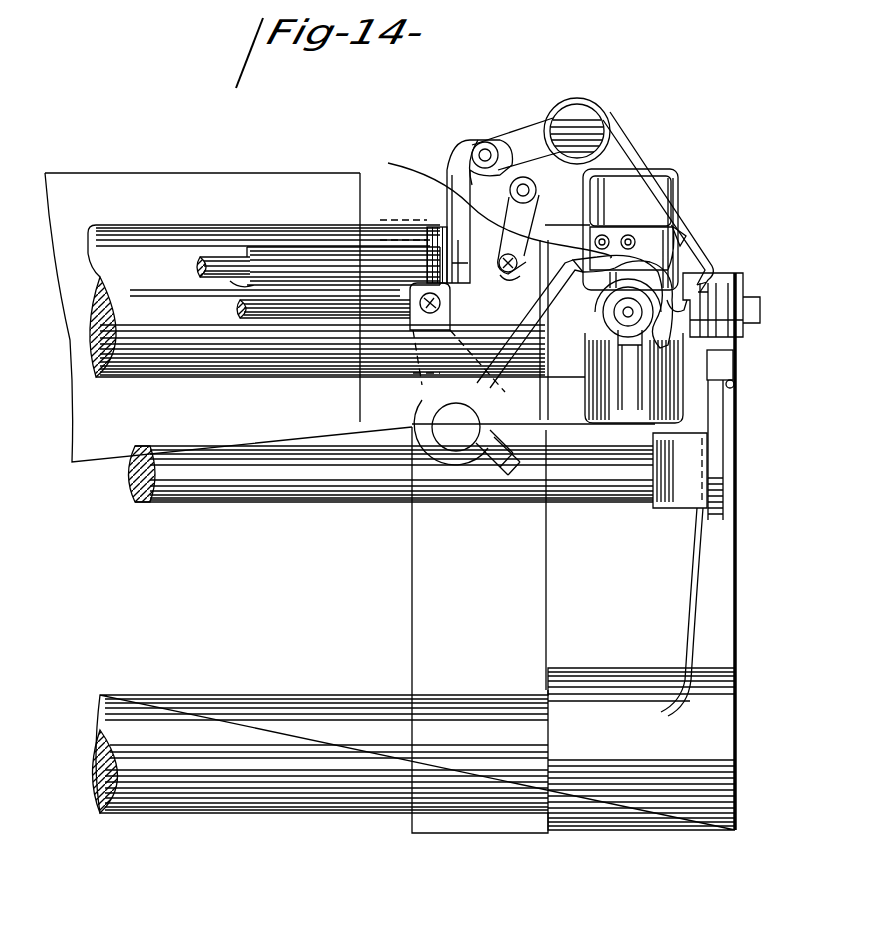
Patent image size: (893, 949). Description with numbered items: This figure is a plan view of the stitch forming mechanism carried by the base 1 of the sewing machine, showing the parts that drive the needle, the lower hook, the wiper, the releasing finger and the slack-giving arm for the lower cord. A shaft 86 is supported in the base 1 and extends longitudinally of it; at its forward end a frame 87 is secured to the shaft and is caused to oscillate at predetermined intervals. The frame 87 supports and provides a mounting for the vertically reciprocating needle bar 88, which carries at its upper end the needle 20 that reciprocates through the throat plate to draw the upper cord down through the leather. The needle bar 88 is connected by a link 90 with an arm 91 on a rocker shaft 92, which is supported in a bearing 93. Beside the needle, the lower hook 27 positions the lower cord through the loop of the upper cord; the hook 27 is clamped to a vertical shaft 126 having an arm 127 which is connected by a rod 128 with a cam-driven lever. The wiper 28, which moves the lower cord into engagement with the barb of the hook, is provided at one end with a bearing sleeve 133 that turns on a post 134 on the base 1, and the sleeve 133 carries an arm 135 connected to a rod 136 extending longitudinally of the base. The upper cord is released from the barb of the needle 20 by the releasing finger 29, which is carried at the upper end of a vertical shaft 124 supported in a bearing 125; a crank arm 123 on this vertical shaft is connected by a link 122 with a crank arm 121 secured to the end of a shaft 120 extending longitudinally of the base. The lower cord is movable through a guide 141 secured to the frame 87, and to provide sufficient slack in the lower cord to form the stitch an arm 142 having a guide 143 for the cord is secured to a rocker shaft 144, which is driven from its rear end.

The base 1 is at (76, 428).
The needle 20 is at (630, 312).
The lower hook 27 is at (513, 314).
The wiper 28 is at (677, 256).
The releasing finger 29 is at (678, 250).
The shaft 86 is at (155, 374).
The frame 87 is at (627, 190).
The needle bar 88 is at (615, 332).
The link 90 is at (742, 283).
The arm 91 is at (698, 578).
The rocker shaft 92 is at (298, 796).
The bearing 93 is at (412, 636).
The shaft 120 is at (225, 262).
The crank arm 121 is at (432, 240).
The link 122 is at (456, 182).
The crank arm 123 is at (530, 132).
The vertical shaft 124 is at (568, 96).
The bearing 125 is at (594, 118).
The vertical shaft 126 is at (464, 452).
The arm 127 is at (430, 386).
The rod 128 is at (238, 306).
The bearing sleeve 133 is at (470, 170).
The post 134 is at (543, 201).
The arm 135 is at (480, 202).
The rod 136 is at (196, 267).
The guide 141 is at (705, 360).
The arm 142 is at (724, 428).
The guide 143 is at (736, 388).
The rocker shaft 144 is at (228, 493).